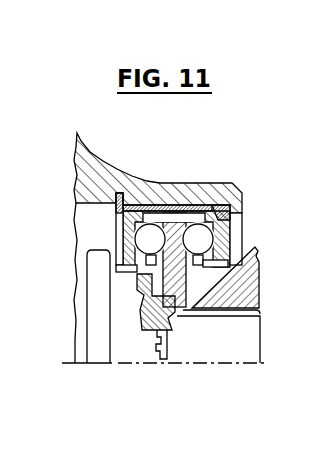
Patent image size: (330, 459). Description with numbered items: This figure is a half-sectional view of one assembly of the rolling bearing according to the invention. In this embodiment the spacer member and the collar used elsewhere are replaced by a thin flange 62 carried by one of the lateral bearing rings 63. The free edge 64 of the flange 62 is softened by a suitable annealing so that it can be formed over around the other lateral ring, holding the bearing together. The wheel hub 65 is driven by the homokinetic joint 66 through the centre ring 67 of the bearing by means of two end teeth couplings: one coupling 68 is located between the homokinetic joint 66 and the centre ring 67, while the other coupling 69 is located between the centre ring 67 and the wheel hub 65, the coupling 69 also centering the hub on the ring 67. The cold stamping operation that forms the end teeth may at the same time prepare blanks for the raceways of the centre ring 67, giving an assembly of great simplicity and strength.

The thin flange 62 is at (180, 207).
The lateral bearing ring 63 is at (115, 213).
The free edge of the flange 64 is at (230, 208).
The wheel hub 65 is at (242, 281).
The homokinetic joint 66 is at (75, 321).
The centre ring of the bearing 67 is at (176, 316).
The end teeth coupling 68 is at (141, 316).
The end teeth coupling 69 is at (210, 311).